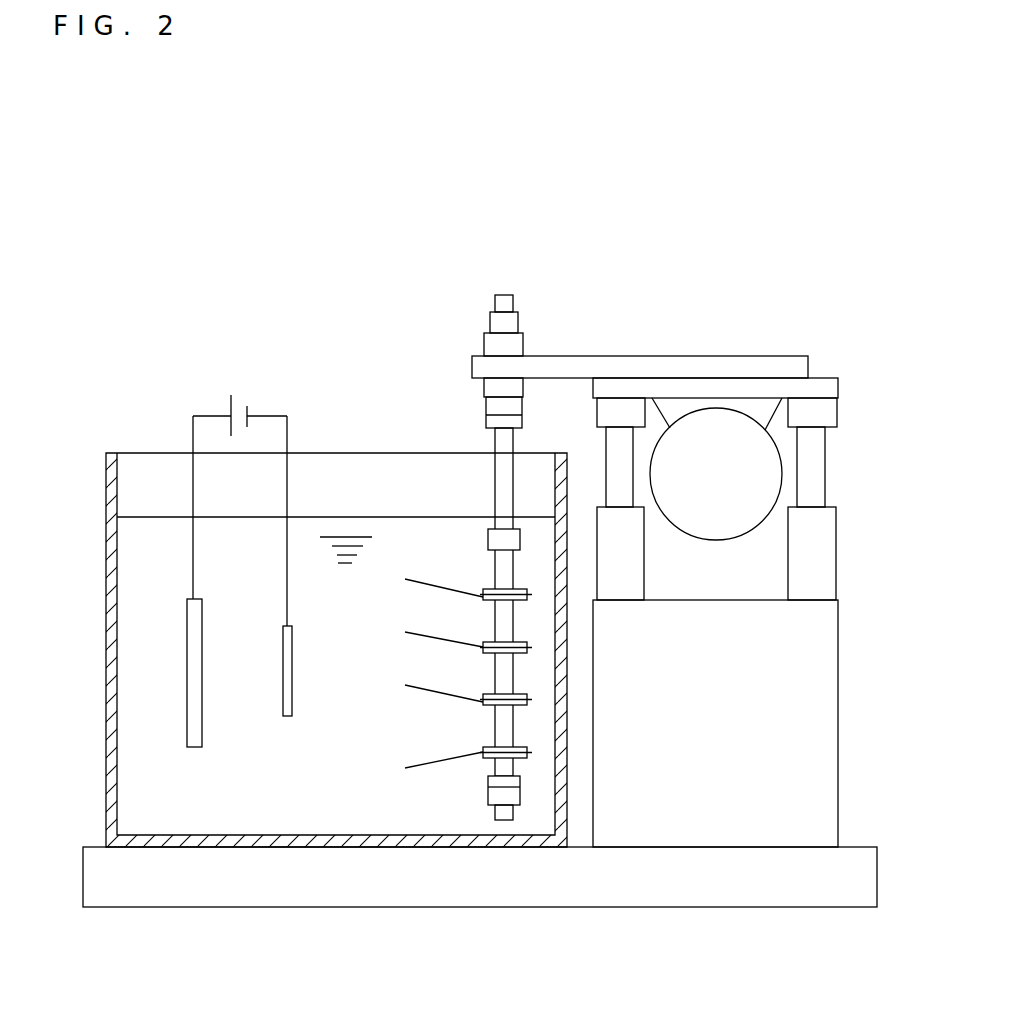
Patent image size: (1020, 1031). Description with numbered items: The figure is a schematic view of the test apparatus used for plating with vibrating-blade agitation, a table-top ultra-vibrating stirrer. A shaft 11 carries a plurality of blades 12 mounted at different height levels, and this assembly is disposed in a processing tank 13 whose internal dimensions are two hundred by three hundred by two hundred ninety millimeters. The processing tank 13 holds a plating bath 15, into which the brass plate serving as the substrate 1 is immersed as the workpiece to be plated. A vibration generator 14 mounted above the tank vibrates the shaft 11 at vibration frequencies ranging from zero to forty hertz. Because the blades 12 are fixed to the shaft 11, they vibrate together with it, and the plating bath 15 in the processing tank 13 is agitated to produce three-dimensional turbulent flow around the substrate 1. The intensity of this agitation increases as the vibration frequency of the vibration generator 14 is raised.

The substrate 1 is at (291, 668).
The shaft 11 is at (505, 443).
The blades 12 is at (435, 584).
The processing tank 13 is at (113, 565).
The vibration generator 14 is at (717, 423).
The plating bath 15 is at (353, 527).